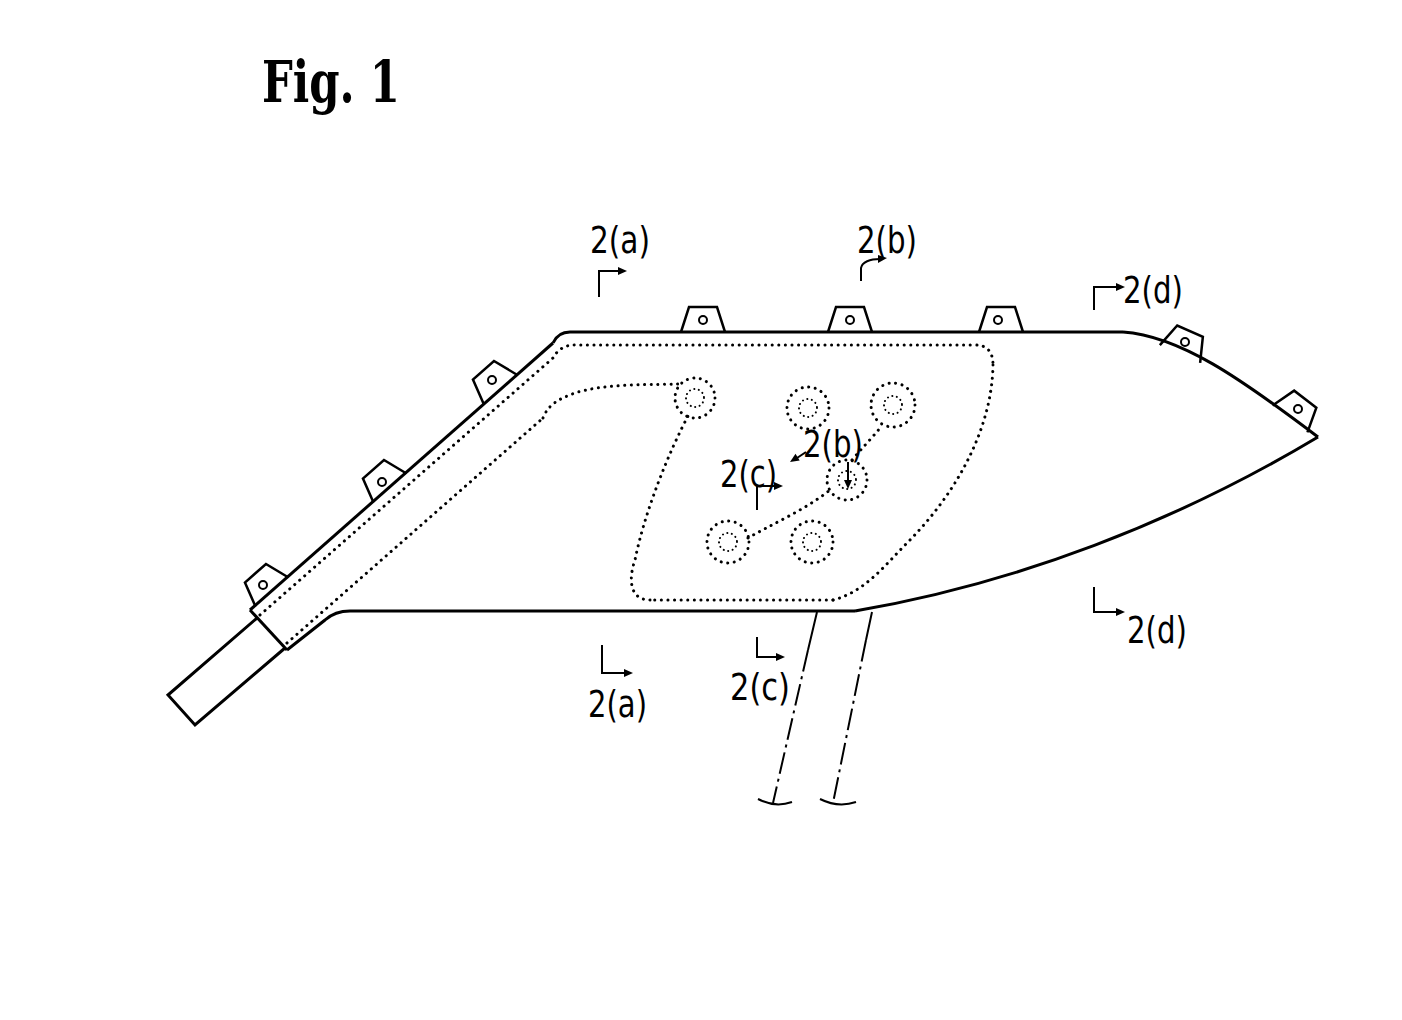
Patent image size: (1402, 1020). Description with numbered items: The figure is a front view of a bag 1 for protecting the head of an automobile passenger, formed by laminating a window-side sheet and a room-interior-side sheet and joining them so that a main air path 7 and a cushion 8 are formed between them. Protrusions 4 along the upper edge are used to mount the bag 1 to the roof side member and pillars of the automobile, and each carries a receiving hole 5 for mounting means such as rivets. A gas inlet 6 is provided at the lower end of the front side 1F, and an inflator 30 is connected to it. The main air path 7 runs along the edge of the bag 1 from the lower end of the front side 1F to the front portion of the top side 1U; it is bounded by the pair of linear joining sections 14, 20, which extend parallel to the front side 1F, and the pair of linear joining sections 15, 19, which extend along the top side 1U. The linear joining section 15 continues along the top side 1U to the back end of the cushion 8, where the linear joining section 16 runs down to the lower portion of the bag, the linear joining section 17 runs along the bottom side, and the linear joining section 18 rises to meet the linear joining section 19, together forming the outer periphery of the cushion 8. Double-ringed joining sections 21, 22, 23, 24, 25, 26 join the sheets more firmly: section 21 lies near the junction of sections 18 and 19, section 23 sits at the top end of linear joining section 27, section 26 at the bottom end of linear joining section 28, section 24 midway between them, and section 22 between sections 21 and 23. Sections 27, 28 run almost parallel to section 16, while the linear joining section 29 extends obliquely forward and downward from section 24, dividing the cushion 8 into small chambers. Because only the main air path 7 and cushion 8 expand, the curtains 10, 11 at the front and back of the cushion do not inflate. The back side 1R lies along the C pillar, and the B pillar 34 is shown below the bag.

The bag 1 is at (798, 459).
The front side 1F is at (401, 456).
The top side 1U is at (838, 252).
The back side 1R is at (1235, 351).
The protrusions 4 is at (793, 419).
The receiving holes 5 is at (258, 580).
The gas inlet 6 is at (275, 684).
The main air path 7 is at (493, 366).
The cushion 8 is at (774, 271).
The curtain 10 is at (571, 624).
The curtain 11 is at (1086, 524).
The linear joining section 14 is at (391, 429).
The linear joining section 15 is at (626, 432).
The linear joining section 16 is at (940, 482).
The linear joining section 17 is at (741, 643).
The linear joining section 18 is at (630, 508).
The linear joining section 19 is at (610, 426).
The linear joining section 20 is at (415, 530).
The double-ringed joining section 21 is at (661, 425).
The double-ringed joining section 22 is at (778, 413).
The double-ringed joining section 23 is at (922, 392).
The double-ringed joining section 24 is at (883, 474).
The double-ringed joining section 25 is at (714, 514).
The double-ringed joining section 26 is at (837, 550).
The linear joining section 27 is at (913, 430).
The linear joining section 28 is at (867, 517).
The linear joining section 29 is at (811, 515).
The inflator 30 is at (226, 713).
The B pillar 34 is at (852, 716).